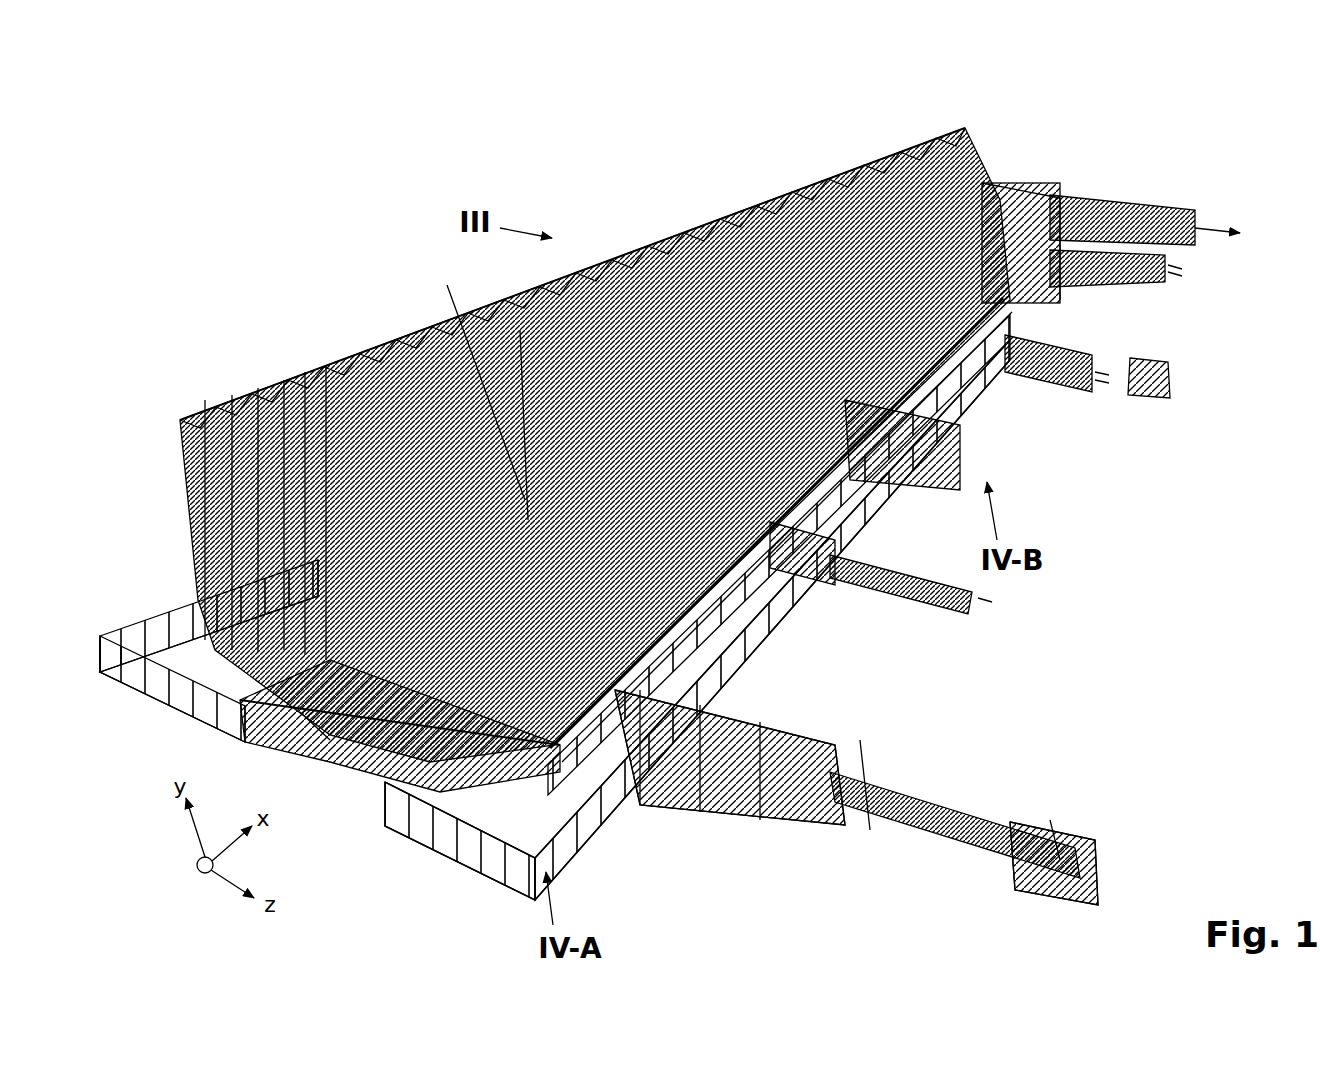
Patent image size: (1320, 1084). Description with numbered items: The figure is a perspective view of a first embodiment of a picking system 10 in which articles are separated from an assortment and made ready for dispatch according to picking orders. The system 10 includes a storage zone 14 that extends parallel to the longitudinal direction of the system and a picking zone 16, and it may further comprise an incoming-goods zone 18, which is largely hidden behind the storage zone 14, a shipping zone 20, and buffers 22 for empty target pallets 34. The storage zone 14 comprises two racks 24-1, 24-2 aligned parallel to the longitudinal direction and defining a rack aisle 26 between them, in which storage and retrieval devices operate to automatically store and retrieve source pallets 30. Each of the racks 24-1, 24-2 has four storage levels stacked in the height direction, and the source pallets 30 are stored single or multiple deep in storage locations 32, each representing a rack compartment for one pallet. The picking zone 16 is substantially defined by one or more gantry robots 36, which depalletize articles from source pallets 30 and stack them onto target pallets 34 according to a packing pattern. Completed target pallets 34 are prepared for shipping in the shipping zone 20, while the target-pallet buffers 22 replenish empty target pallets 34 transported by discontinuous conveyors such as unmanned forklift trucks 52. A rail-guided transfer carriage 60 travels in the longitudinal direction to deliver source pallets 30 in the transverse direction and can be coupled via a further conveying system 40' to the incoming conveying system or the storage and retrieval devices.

The picking system 10 is at (212, 234).
The storage zone 14 is at (714, 188).
The picking zone 16 is at (1033, 170).
The incoming-goods zone 18 is at (414, 313).
The shipping zone 20 is at (1011, 600).
The buffer for empty target pallets 22 is at (742, 808).
The rack 24-1 is at (981, 132).
The rack 24-2 is at (907, 115).
The rack aisle 26 is at (286, 590).
The source pallet 30 is at (368, 458).
The storage location 32 is at (333, 527).
The target pallet 34 is at (830, 545).
The gantry robot 36 is at (1008, 148).
The further conveying system 40' is at (298, 761).
The unmanned forklift truck 52 is at (1060, 830).
The transfer carriage 60 is at (1010, 312).